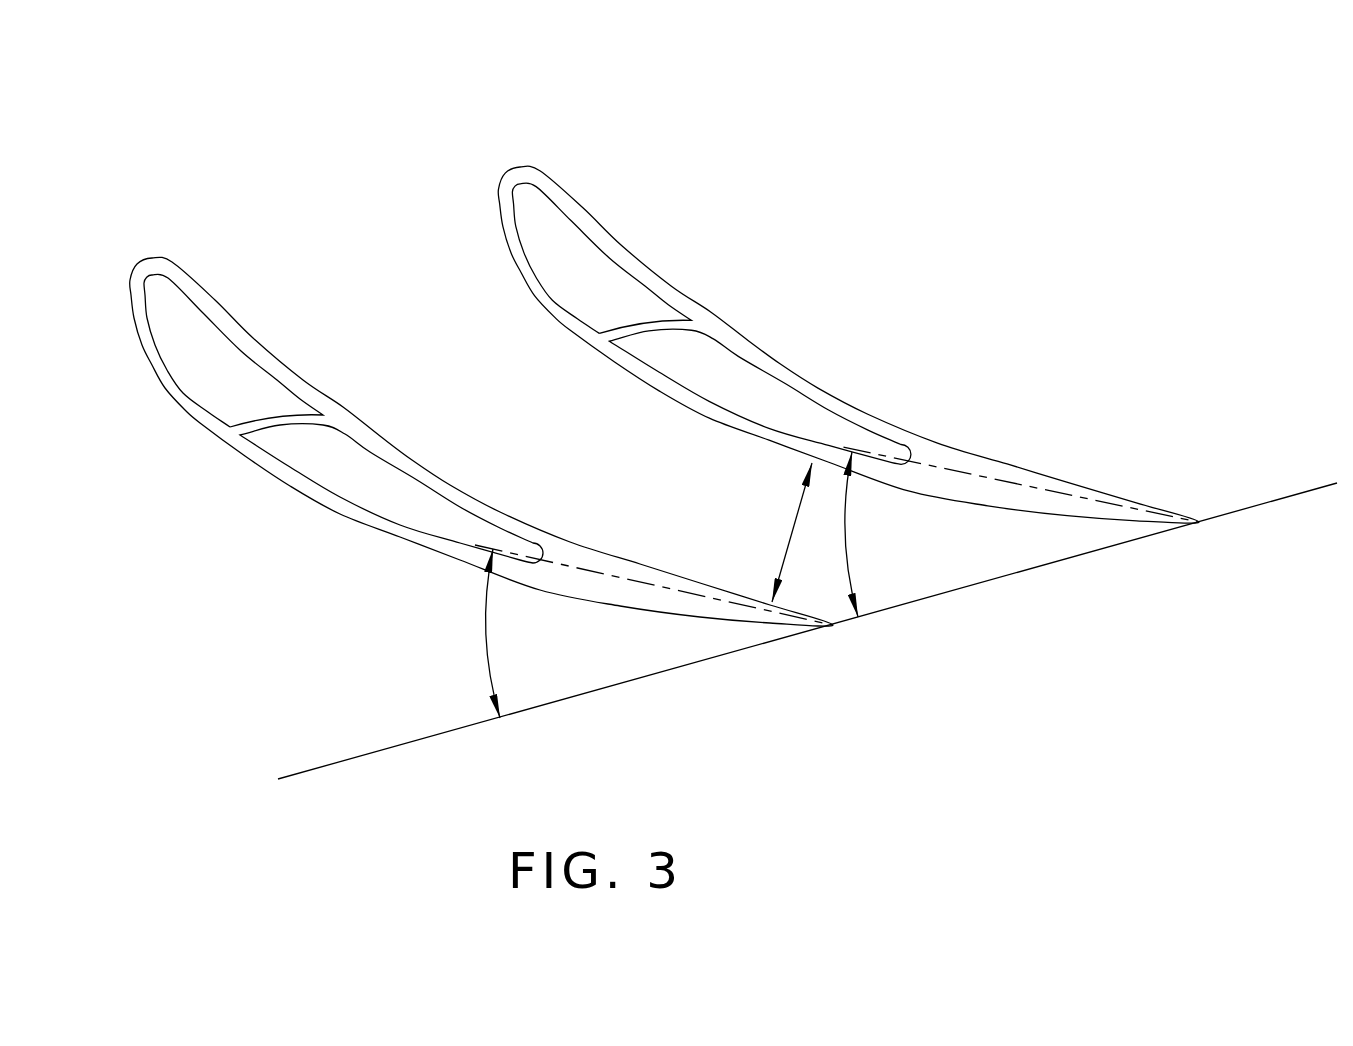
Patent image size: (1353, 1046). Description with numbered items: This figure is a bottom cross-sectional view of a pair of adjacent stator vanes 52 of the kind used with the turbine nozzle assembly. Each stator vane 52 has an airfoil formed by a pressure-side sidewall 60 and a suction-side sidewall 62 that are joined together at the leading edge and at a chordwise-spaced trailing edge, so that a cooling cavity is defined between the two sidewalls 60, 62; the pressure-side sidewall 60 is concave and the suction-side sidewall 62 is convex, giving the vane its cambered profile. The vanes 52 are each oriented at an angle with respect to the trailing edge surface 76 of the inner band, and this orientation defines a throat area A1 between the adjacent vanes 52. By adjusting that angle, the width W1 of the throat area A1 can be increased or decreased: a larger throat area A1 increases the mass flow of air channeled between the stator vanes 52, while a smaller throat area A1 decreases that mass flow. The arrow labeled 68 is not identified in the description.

The stator vane 52 is at (631, 326).
The pressure-side sidewall 60 is at (254, 337).
The suction-side sidewall 62 is at (199, 424).
The leading edge cavity / cooling flow 68 is at (190, 337).
The trailing edge surface 76 is at (736, 651).
The throat area A1 is at (537, 382).
The width of throat area W1 is at (790, 533).